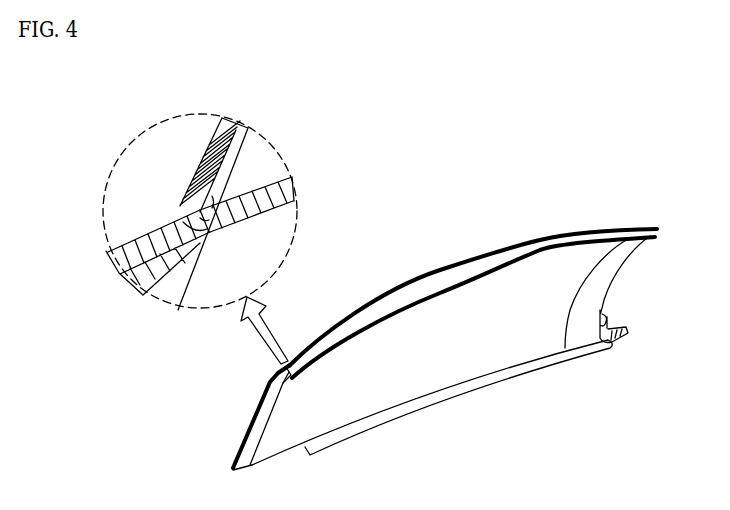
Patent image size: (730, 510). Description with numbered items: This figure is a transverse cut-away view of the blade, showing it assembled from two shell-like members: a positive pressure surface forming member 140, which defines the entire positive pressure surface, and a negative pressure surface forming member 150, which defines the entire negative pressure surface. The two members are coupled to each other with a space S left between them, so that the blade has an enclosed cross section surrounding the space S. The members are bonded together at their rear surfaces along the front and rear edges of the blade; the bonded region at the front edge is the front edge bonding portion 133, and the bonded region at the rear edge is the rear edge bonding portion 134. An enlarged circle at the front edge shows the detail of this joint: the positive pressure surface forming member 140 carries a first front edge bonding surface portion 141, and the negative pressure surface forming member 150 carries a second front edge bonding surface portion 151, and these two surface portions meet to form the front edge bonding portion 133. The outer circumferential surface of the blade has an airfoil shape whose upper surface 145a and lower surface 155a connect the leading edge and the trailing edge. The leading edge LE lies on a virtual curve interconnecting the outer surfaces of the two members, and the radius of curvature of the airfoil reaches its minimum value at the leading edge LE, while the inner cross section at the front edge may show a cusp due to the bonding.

The positive pressure surface forming member 140 is at (371, 299).
The space S is at (435, 276).
The rear edge bonding portion 134 is at (586, 293).
The negative pressure surface forming member 150 is at (440, 343).
The front edge bonding portion 133 is at (250, 454).
The first front edge bonding surface portion 141 is at (120, 246).
The upper surface 145a is at (211, 143).
The lower surface 155a is at (250, 218).
The second front edge bonding surface portion 151 is at (149, 288).
The leading edge LE is at (160, 216).